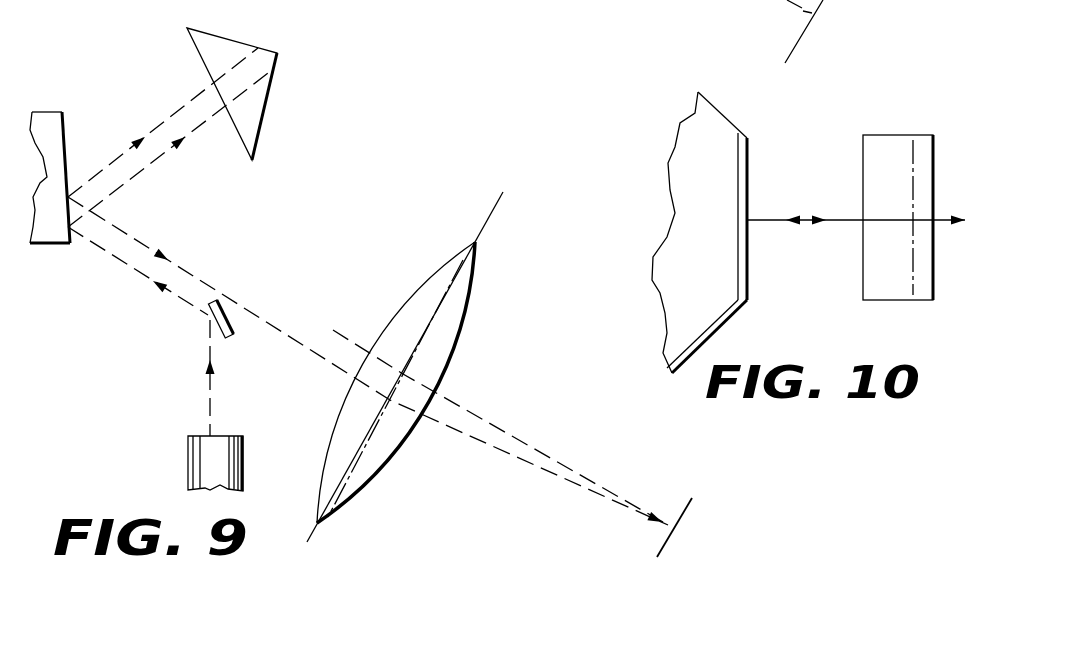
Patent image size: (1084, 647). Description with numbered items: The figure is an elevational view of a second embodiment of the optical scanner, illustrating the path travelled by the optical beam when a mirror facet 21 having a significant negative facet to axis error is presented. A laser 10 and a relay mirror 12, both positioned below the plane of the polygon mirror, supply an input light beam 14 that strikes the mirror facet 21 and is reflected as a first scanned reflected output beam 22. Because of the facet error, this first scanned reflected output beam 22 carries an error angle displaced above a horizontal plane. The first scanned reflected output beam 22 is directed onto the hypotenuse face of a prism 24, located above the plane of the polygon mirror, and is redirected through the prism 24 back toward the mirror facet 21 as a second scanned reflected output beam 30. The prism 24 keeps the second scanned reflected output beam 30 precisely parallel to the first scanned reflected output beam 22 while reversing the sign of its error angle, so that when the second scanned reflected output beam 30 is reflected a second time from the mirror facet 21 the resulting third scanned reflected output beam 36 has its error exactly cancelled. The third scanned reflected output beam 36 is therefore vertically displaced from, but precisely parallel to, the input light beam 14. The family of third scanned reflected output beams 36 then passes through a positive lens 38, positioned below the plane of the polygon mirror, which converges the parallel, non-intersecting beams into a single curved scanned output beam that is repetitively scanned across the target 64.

In FIG. 9, the laser 10 is at (190, 452).
In FIG. 9, the relay mirror 12 is at (233, 323).
In FIG. 9, the input light beam 14 is at (177, 300).
In FIG. 9, the mirror facet 21 is at (67, 133).
In FIG. 10, the mirror facet 21 is at (748, 170).
In FIG. 9, the first scanned reflected output beam 22 is at (175, 147).
In FIG. 9, the prism 24 is at (267, 100).
In FIG. 10, the prism 24 is at (880, 135).
In FIG. 9, the second scanned reflected output beam 30 is at (145, 134).
In FIG. 9, the third scanned reflected output beam 36 is at (148, 245).
In FIG. 10, the third scanned reflected output beam 36 is at (940, 222).
In FIG. 9, the positive lens 38 is at (437, 268).
In FIG. 9, the target 64 is at (677, 520).